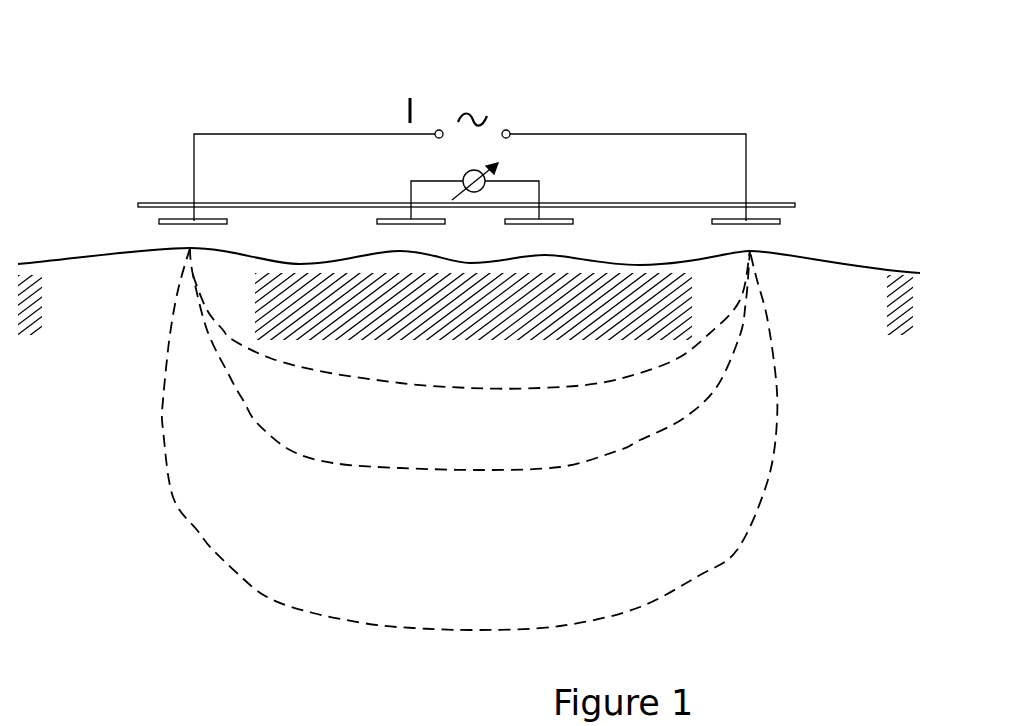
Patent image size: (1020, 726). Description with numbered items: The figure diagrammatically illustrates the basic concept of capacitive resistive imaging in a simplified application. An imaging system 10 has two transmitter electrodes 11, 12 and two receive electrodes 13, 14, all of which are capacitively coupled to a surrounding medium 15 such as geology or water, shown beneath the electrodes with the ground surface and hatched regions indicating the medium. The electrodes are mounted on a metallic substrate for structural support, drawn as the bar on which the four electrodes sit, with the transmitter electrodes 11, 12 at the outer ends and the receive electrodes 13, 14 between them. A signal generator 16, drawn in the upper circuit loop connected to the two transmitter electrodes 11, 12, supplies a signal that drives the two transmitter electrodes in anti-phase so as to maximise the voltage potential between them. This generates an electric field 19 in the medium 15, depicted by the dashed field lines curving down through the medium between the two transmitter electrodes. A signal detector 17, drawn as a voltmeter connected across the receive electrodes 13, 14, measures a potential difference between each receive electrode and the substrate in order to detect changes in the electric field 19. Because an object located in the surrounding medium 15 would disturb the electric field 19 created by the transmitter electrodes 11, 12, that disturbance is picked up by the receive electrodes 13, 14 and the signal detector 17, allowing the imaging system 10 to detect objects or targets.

The imaging system 10 is at (708, 100).
The transmitter electrode 11 is at (157, 235).
The transmitter electrode 12 is at (780, 226).
The receive electrode 13 is at (367, 233).
The receive electrode 14 is at (573, 228).
The surrounding medium 15 is at (392, 357).
The signal generator 16 is at (474, 108).
The signal detector 17 is at (506, 171).
The electric field 19 is at (745, 318).